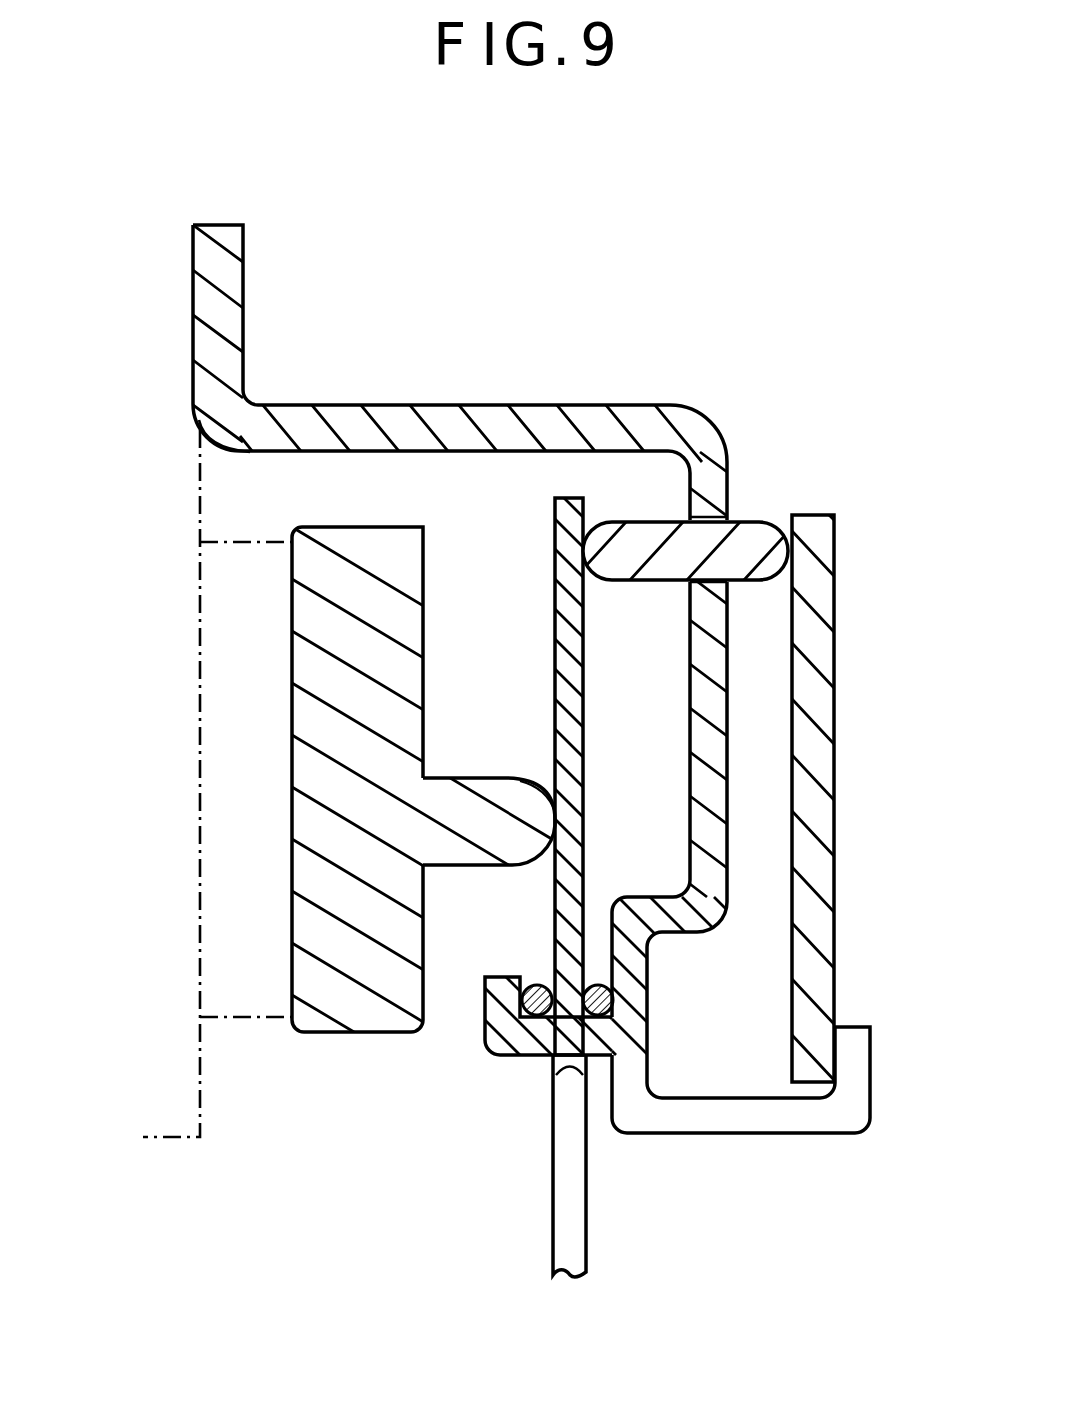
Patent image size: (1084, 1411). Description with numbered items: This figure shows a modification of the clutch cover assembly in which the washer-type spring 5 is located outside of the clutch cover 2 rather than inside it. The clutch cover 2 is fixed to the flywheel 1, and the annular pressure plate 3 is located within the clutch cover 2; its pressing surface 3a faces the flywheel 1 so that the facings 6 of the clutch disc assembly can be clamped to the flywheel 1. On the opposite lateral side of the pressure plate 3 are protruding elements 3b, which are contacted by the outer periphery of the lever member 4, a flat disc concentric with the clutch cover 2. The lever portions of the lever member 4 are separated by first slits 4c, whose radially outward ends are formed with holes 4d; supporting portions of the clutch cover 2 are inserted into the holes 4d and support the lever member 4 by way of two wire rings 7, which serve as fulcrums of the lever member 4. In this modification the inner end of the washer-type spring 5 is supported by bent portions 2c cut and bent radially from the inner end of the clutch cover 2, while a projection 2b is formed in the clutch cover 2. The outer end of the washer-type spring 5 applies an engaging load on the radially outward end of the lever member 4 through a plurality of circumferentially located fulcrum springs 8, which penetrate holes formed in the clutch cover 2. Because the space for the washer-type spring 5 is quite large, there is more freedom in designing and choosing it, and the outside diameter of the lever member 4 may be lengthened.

The flywheel 1 is at (148, 1137).
The clutch cover 2 is at (235, 285).
The projection 2b is at (635, 1050).
The bent portions 2c is at (768, 1113).
The pressure plate 3 is at (340, 1018).
The pressing surface 3a is at (288, 587).
The protruding elements 3b is at (488, 808).
The lever member 4 is at (634, 1243).
The first slits 4c is at (563, 1227).
The holes 4d is at (550, 1065).
The washer-type spring 5 is at (820, 815).
The facings 6 is at (250, 1022).
The wire rings 7 is at (598, 1005).
The fulcrum springs 8 is at (745, 540).